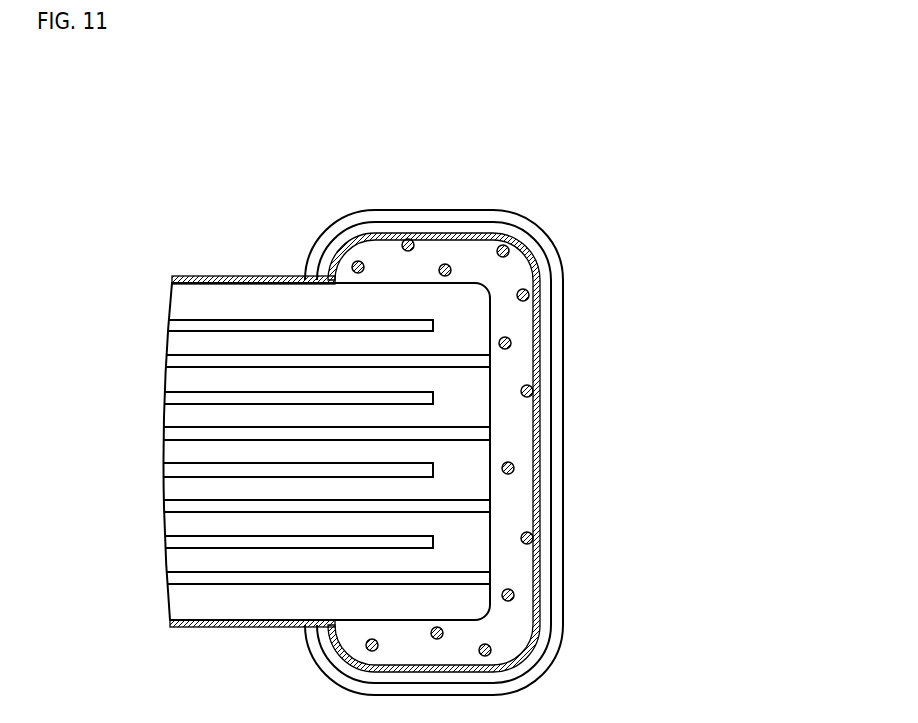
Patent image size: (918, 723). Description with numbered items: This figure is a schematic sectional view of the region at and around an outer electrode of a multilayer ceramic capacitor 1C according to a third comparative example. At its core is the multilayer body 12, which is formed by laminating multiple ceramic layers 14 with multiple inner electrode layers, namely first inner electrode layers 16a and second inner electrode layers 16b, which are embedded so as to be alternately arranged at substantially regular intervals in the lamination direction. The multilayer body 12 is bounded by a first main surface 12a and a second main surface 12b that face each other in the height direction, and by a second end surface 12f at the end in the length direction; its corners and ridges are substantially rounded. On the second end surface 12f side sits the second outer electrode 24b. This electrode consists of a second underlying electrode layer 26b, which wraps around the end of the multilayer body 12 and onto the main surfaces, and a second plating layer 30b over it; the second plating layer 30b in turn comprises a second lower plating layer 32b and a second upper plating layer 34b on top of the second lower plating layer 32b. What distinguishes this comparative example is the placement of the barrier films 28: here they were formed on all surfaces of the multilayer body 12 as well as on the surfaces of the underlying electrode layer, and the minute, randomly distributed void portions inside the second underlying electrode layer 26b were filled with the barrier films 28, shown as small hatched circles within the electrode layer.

The multilayer ceramic capacitor 1C is at (220, 111).
The multilayer body 12 is at (394, 382).
The first main surface 12a is at (244, 278).
The second main surface 12b is at (252, 628).
The second end surface 12f is at (490, 411).
The ceramic layers 14 is at (225, 343).
The first inner electrode layers 16a is at (287, 395).
The second inner electrode layers 16b is at (173, 433).
The second outer electrode 24b is at (347, 98).
The second underlying electrode layer 26b is at (380, 258).
The barrier films 28 is at (186, 275).
The second plating layer 30b is at (385, 158).
The second lower plating layer 32b is at (421, 222).
The second upper plating layer 34b is at (477, 210).